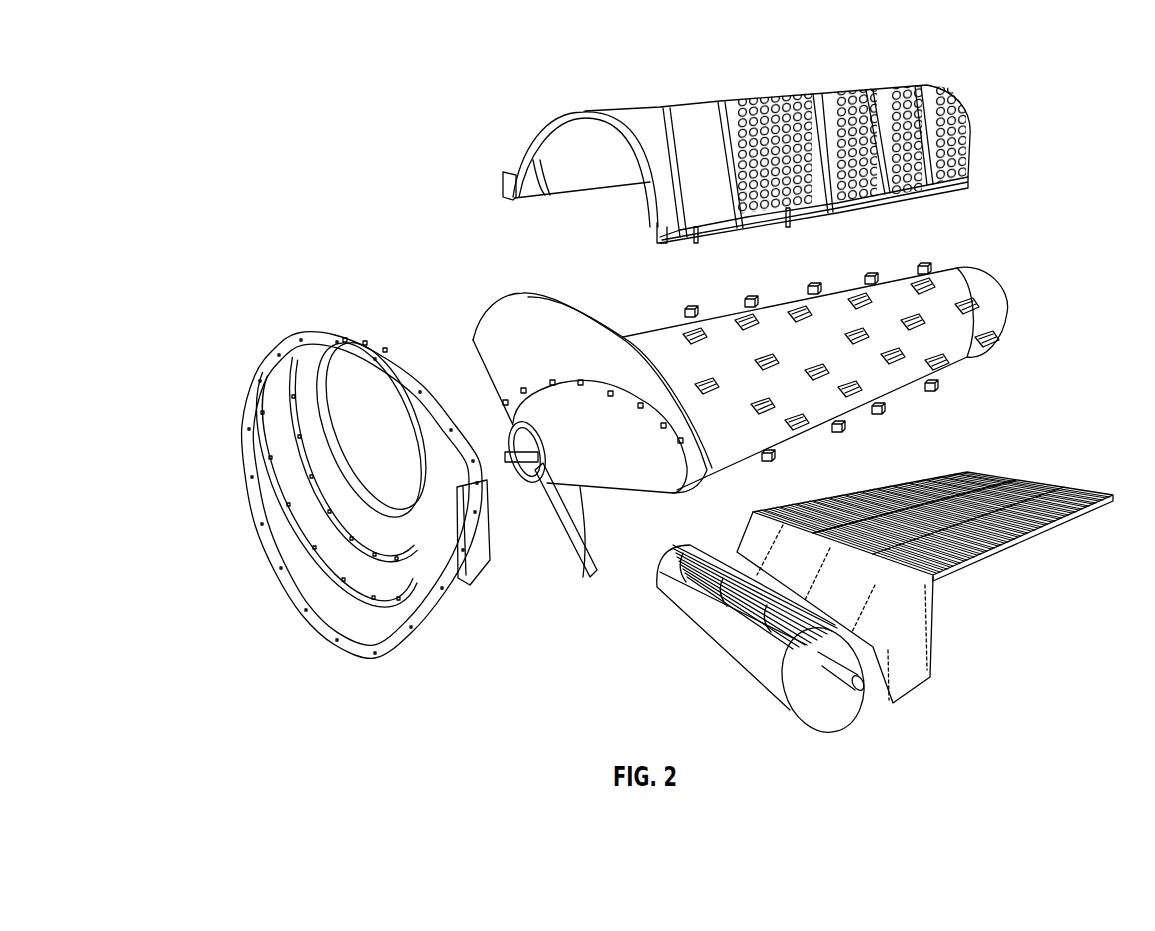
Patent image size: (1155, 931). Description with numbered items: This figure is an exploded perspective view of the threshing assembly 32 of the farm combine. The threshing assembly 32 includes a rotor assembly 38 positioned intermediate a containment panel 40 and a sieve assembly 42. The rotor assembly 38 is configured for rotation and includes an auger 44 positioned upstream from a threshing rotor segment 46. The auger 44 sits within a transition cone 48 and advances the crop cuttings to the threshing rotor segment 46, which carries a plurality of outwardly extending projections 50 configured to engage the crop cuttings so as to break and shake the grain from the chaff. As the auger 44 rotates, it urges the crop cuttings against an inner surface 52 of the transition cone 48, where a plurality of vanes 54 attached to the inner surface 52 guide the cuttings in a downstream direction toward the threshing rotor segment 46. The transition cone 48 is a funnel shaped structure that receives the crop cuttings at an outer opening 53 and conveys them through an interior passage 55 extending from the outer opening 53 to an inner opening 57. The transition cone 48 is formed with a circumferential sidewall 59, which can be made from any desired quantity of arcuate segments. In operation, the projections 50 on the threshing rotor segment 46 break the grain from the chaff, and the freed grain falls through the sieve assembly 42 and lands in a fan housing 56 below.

The threshing assembly 32 is at (511, 76).
The rotor assembly 38 is at (1008, 305).
The containment panel 40 is at (880, 88).
The sieve assembly 42 is at (1078, 489).
The auger 44 is at (492, 330).
The threshing rotor segment 46 is at (1000, 323).
The transition cone 48 is at (410, 640).
The projections 50 is at (750, 300).
The inner surface 52 is at (273, 336).
The outer opening 53 is at (340, 637).
The vanes 54 is at (287, 380).
The interior passage 55 is at (330, 467).
The fan housing 56 is at (910, 677).
The inner opening 57 is at (483, 563).
The circumferential sidewall 59 is at (365, 342).